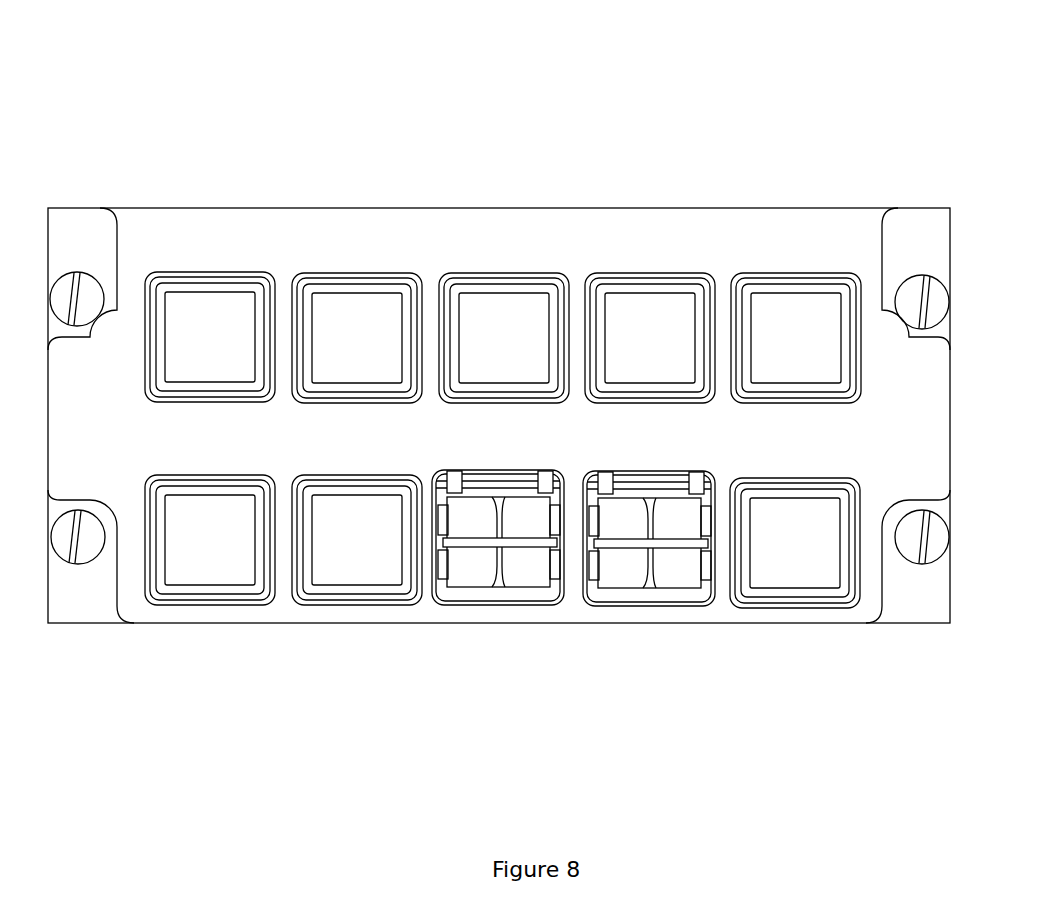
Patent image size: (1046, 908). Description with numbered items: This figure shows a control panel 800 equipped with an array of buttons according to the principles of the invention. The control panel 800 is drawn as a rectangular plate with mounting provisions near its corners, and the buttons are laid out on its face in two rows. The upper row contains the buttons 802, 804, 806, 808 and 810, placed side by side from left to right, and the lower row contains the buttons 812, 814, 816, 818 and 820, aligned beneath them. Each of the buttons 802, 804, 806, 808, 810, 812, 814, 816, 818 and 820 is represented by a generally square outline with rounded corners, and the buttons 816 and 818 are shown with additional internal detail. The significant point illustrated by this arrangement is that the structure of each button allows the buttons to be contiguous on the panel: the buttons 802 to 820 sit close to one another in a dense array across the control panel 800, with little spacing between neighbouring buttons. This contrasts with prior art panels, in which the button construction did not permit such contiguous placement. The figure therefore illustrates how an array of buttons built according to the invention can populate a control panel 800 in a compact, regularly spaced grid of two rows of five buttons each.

The control panel 800 is at (503, 47).
The button 802 is at (185, 268).
The button 804 is at (337, 268).
The button 806 is at (473, 268).
The button 808 is at (627, 268).
The button 810 is at (775, 268).
The button 812 is at (207, 613).
The button 814 is at (343, 613).
The button 816 is at (487, 613).
The button 818 is at (645, 613).
The button 820 is at (797, 613).